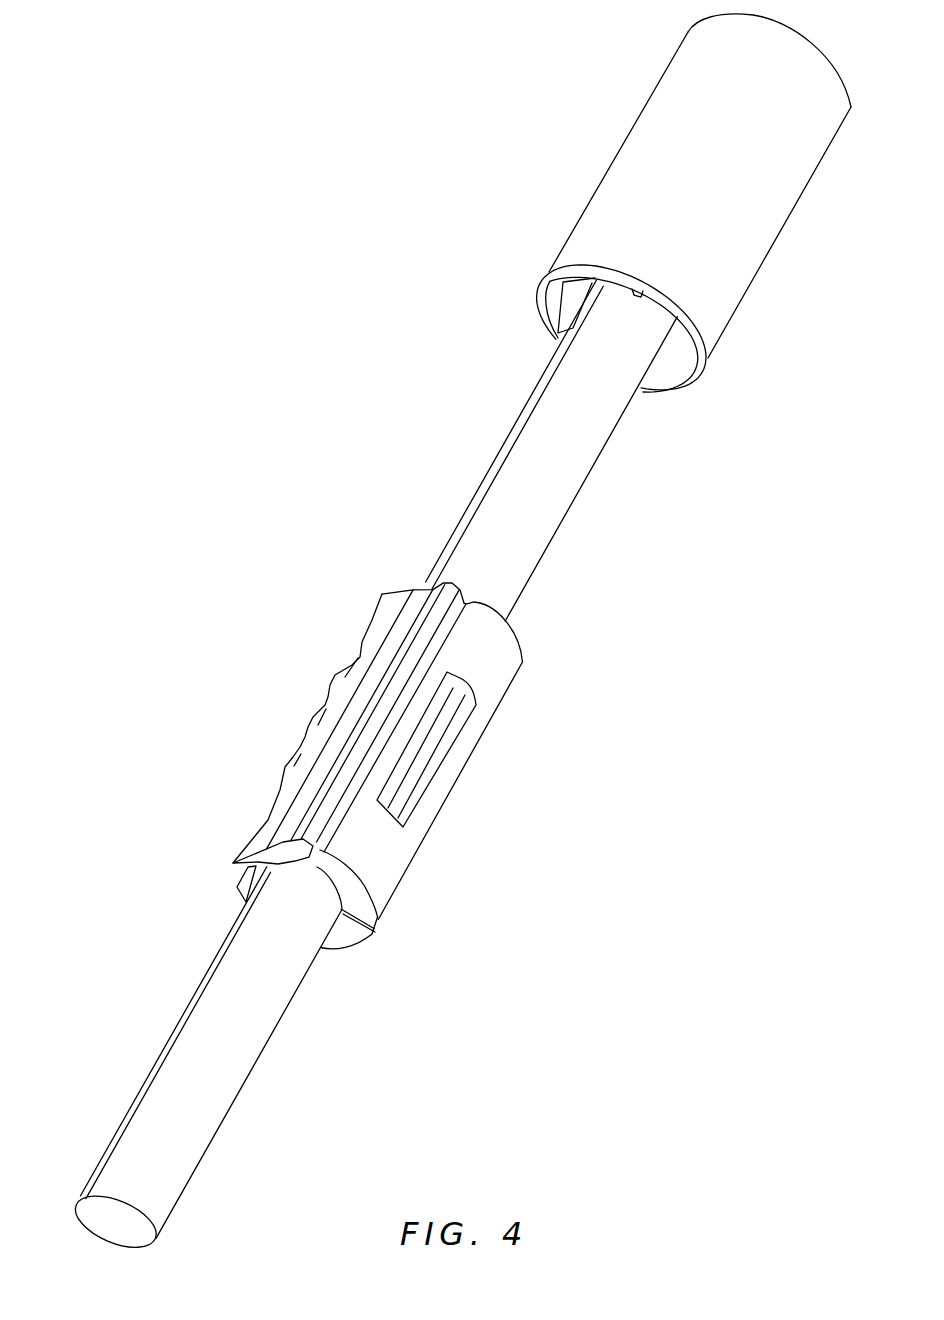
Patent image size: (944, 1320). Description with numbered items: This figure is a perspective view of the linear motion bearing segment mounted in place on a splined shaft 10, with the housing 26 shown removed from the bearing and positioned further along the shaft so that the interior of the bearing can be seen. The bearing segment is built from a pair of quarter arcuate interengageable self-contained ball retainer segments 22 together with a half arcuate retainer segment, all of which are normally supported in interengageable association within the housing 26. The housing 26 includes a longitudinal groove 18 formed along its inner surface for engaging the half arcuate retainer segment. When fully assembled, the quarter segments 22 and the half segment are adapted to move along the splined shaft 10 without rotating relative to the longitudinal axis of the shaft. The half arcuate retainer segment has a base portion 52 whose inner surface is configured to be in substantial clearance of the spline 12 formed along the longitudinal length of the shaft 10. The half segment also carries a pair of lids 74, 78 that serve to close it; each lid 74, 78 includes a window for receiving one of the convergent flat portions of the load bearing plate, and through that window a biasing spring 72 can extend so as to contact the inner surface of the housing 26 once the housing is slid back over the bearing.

The splined shaft 10 is at (497, 500).
The spline 12 is at (105, 1160).
The longitudinal groove 18 is at (557, 307).
The quarter arcuate interengageable self-contained ball retainer segment 22 is at (500, 683).
The housing 26 is at (718, 327).
The base portion 52 is at (440, 585).
The biasing spring 72 is at (290, 763).
The lid 74 is at (237, 887).
The lid 78 is at (258, 833).